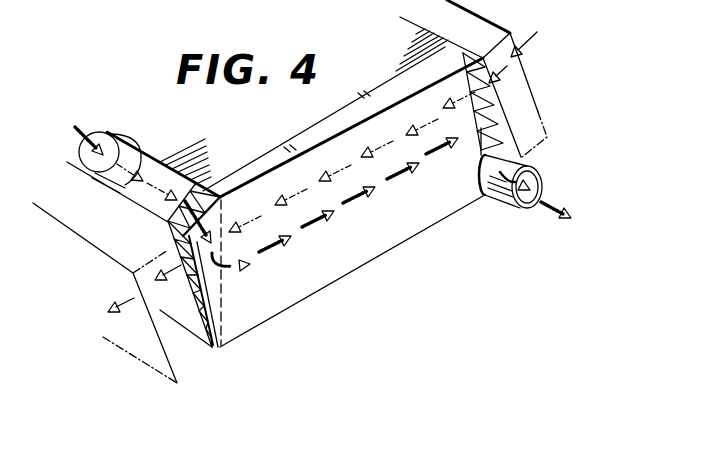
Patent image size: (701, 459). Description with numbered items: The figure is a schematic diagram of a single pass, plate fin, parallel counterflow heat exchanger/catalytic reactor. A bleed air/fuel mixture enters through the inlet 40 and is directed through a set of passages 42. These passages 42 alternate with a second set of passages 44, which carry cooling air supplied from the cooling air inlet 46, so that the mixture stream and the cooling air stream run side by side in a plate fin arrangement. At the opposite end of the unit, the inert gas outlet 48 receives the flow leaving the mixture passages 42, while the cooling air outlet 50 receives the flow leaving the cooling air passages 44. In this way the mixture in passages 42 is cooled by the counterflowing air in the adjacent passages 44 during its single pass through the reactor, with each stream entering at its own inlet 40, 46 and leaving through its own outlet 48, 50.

The inlet 40 is at (128, 149).
The passages 42 is at (246, 176).
The passages 44 is at (319, 124).
The cooling air inlet 46 is at (540, 108).
The inert gas outlet 48 is at (507, 205).
The cooling air outlet 50 is at (196, 369).